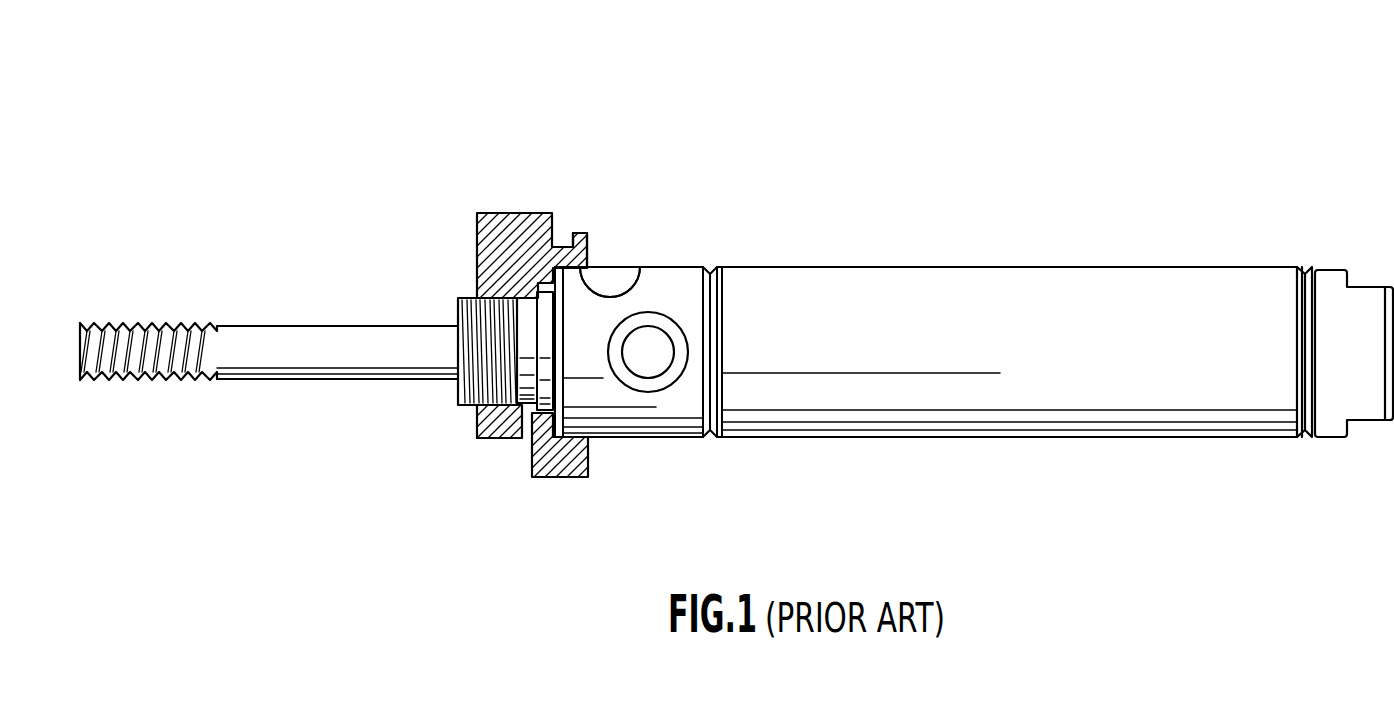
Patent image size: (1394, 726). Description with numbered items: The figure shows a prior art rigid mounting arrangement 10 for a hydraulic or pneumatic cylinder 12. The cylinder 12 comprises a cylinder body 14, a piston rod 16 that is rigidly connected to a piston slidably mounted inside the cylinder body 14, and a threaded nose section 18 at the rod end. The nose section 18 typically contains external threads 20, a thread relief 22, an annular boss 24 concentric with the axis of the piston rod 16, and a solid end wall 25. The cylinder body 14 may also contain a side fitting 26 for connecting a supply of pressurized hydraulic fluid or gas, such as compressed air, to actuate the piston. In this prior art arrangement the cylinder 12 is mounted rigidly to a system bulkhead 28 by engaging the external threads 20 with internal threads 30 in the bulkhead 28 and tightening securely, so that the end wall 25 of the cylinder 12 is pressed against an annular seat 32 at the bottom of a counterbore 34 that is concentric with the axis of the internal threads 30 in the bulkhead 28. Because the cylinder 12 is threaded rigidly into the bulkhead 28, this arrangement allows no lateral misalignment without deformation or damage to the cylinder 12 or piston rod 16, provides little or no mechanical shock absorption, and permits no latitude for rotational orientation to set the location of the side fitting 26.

The rigid mounting arrangement 10 is at (752, 127).
The cylinder 12 is at (870, 212).
The cylinder body 14 is at (940, 267).
The piston rod 16 is at (262, 326).
The threaded nose section 18 is at (458, 388).
The external threads 20 is at (477, 407).
The thread relief 22 is at (530, 410).
The annular boss 24 is at (532, 412).
The solid end wall 25 is at (521, 415).
The side fitting 26 is at (665, 387).
The system bulkhead 28 is at (515, 295).
The internal threads 30 is at (556, 266).
The annular seat 32 is at (568, 278).
The counterbore 34 is at (632, 290).